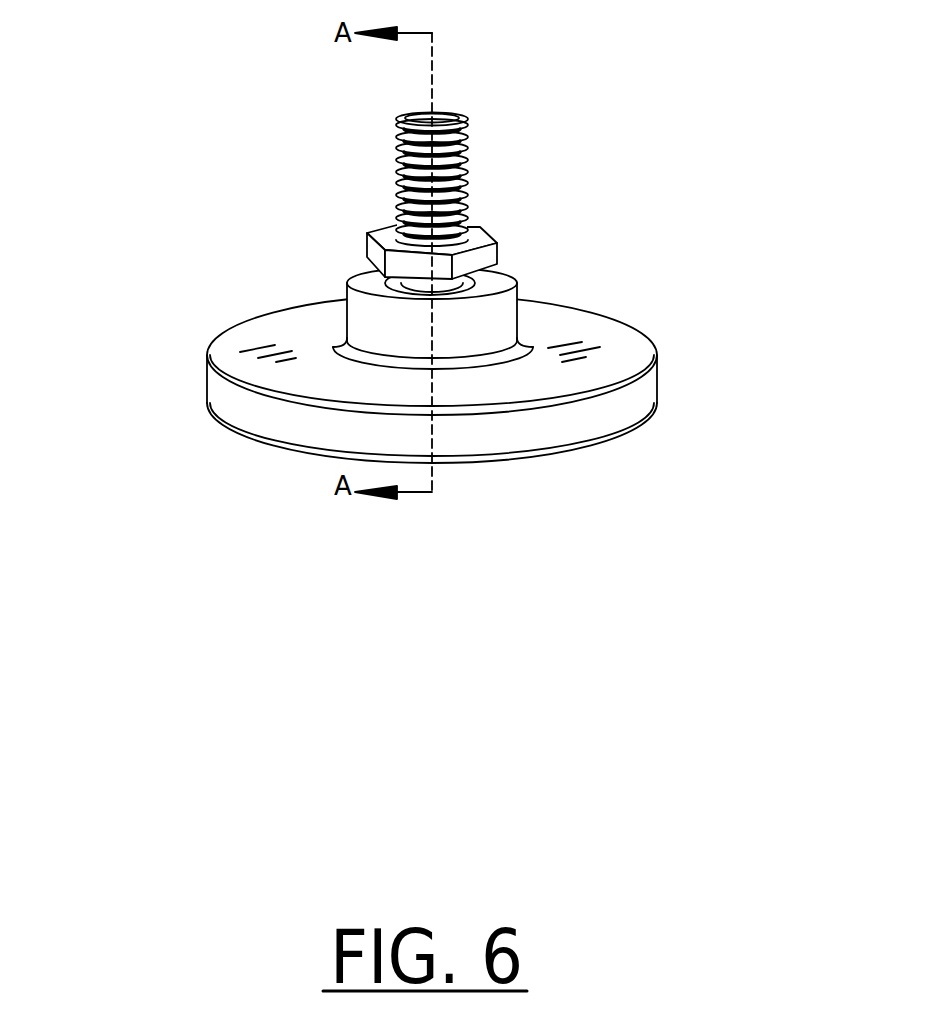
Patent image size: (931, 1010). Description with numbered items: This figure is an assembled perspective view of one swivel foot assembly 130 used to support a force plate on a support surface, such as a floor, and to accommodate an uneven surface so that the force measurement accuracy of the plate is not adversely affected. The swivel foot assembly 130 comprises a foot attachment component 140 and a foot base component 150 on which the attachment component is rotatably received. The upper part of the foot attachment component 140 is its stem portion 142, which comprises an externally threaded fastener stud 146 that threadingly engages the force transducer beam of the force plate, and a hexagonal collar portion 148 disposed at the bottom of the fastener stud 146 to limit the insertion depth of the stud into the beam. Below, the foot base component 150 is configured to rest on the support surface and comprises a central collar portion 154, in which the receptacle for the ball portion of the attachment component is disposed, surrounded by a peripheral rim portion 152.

The swivel foot assembly 130 is at (243, 444).
The foot attachment component 140 is at (487, 226).
The stem portion 142 is at (440, 118).
The fastener stud 146 is at (470, 143).
The hexagonal collar portion 148 is at (501, 249).
The foot base component 150 is at (439, 462).
The peripheral rim portion 152 is at (561, 321).
The central collar portion 154 is at (353, 320).